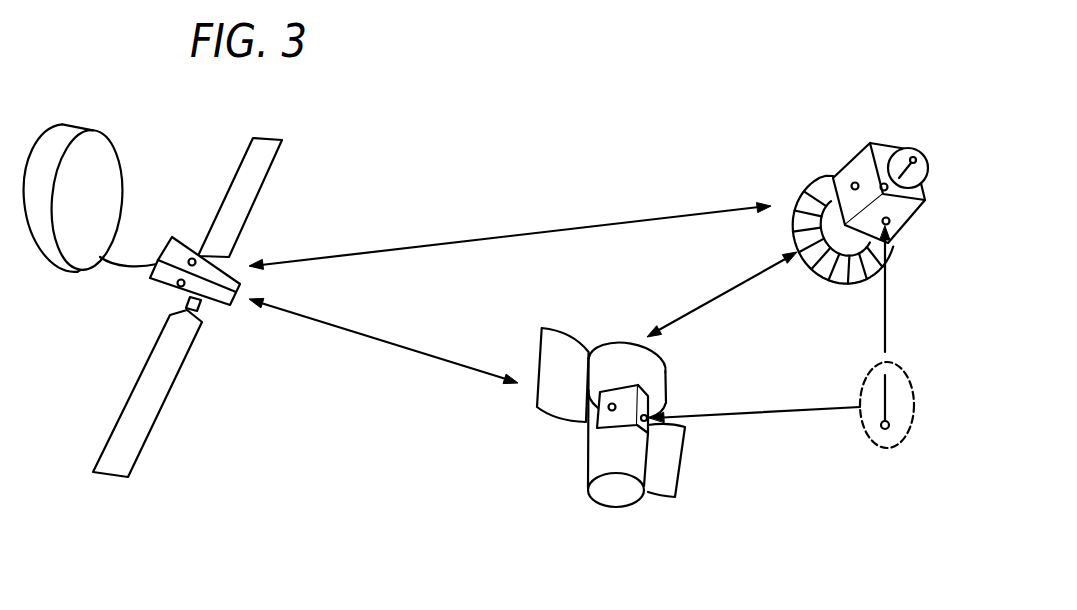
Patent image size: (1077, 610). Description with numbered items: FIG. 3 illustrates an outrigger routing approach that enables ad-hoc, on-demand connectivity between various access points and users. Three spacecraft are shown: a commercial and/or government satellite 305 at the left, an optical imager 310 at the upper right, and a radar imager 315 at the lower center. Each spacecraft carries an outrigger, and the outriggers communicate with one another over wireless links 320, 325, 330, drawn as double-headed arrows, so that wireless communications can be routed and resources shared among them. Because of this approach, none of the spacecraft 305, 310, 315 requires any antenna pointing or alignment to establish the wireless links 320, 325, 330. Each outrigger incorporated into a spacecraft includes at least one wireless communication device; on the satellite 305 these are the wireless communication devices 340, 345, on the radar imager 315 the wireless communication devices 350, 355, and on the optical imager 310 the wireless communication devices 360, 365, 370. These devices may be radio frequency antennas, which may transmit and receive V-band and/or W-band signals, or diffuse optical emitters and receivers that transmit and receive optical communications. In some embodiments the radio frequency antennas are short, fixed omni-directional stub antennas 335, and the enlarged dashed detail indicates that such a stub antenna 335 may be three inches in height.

The commercial and/or government satellite 305 is at (223, 358).
The optical imager 310 is at (847, 128).
The radar imager 315 is at (567, 490).
The wireless link 320 is at (510, 236).
The wireless link 325 is at (383, 340).
The wireless link 330 is at (722, 292).
The short, fixed omni-directional stub antenna 335 is at (887, 451).
The wireless communication device 340 is at (192, 258).
The wireless communication device 345 is at (181, 287).
The wireless communication device 350 is at (608, 407).
The wireless communication device 355 is at (647, 421).
The wireless communication device 360 is at (853, 182).
The wireless communication device 365 is at (885, 183).
The wireless communication device 370 is at (882, 222).